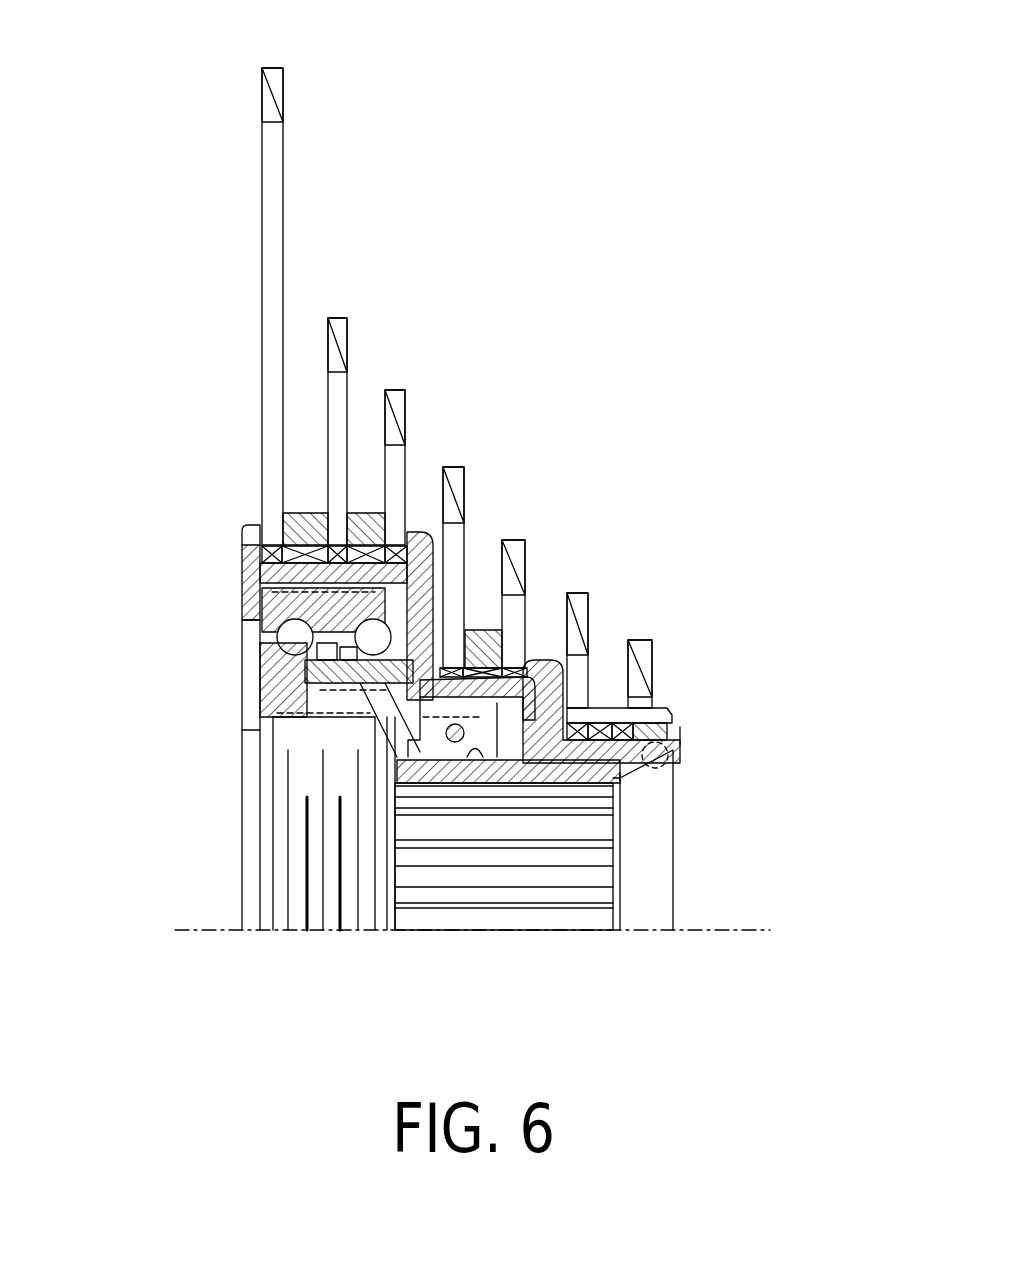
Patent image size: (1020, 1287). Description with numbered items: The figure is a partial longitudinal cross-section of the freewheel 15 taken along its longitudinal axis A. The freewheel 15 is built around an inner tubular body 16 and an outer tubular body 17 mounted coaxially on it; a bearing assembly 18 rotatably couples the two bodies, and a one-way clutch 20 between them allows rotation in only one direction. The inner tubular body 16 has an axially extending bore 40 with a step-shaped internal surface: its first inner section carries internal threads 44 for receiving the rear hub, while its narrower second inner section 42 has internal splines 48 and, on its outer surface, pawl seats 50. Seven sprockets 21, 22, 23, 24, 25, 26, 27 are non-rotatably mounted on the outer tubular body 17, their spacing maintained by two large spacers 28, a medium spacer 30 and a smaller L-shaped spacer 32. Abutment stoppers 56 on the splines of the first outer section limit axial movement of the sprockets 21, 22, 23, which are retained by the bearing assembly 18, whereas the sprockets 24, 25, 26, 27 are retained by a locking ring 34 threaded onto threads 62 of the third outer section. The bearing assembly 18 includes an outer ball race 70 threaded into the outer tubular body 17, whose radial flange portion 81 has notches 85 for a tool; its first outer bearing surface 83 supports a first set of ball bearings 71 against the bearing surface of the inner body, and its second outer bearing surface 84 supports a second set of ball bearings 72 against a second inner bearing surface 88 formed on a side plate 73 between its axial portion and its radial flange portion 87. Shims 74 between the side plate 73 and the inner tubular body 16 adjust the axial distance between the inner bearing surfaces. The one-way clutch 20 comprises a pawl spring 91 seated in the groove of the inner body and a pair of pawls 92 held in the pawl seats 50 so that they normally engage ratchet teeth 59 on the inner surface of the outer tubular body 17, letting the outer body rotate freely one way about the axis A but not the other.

The freewheel 15 is at (594, 188).
The inner tubular body 16 is at (260, 697).
The outer tubular body 17 is at (640, 765).
The bearing assembly 18 is at (258, 642).
The one-way clutch 20 is at (506, 748).
The sprocket 21 is at (273, 84).
The sprocket 22 is at (334, 318).
The sprocket 23 is at (397, 392).
The sprocket 24 is at (455, 467).
The sprocket 25 is at (518, 542).
The sprocket 26 is at (583, 603).
The sprocket 27 is at (645, 650).
The large spacer 28 is at (305, 511).
The medium spacer 30 is at (540, 656).
The L-shaped spacer 32 is at (541, 700).
The locking ring 34 is at (668, 732).
The bore 40 is at (633, 858).
The second inner section 42 is at (627, 780).
The threads 44 is at (285, 890).
The splines 48 is at (530, 880).
The pawl seat 50 is at (470, 768).
The abutment stopper 56 is at (418, 533).
The ratchet teeth 59 is at (578, 706).
The threads 62 is at (668, 766).
The outer ball race 70 is at (260, 598).
The first set of ball bearings 71 is at (285, 633).
The second set of ball bearings 72 is at (237, 667).
The side plate 73 is at (330, 712).
The shims 74 is at (243, 680).
The radial flange portion 81 is at (242, 563).
The first outer bearing surface 83 is at (262, 643).
The second outer bearing surface 84 is at (481, 627).
The notches 85 is at (243, 526).
The radial flange portion 87 is at (513, 676).
The second inner bearing surface 88 is at (375, 718).
The pawl spring 91 is at (449, 745).
The pawls 92 is at (410, 745).
The longitudinal axis A is at (727, 930).